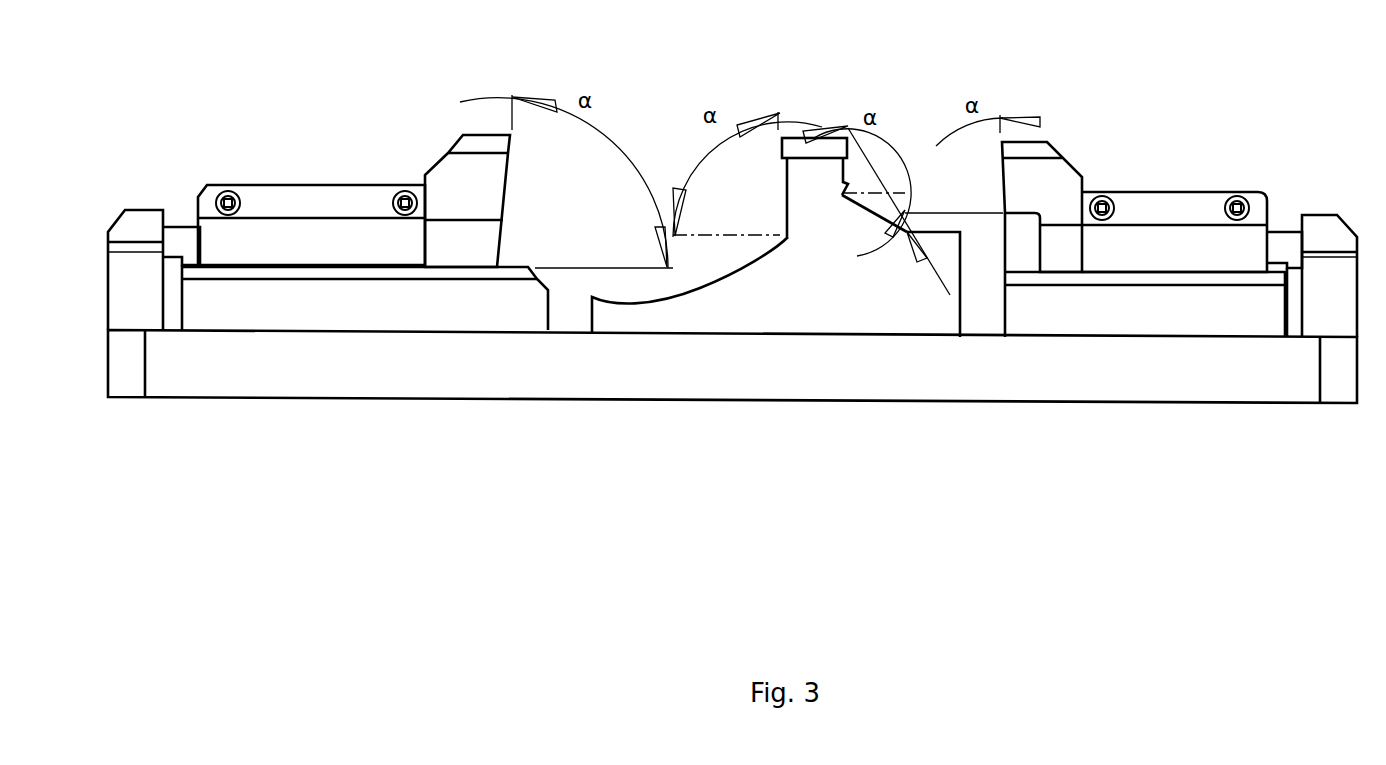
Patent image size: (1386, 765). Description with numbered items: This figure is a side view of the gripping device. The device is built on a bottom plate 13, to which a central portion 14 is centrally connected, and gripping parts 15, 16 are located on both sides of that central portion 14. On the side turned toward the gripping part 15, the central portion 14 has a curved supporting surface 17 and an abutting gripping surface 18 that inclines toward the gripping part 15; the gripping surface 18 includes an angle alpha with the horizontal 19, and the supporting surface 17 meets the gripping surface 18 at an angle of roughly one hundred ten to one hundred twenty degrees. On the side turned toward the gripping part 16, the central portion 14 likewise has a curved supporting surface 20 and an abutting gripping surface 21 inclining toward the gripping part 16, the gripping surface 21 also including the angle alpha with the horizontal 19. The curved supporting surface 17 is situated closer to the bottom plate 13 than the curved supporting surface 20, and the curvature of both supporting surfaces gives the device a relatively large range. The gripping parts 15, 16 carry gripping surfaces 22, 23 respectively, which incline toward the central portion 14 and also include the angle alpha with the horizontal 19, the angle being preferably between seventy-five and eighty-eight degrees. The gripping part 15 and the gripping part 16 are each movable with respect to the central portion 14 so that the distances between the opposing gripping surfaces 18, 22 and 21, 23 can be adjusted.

The bottom plate 13 is at (353, 377).
The central portion 14 is at (810, 313).
The gripping part 15 is at (287, 245).
The gripping part 16 is at (1172, 262).
The curved supporting surface 17 is at (667, 300).
The gripping surface 18 is at (785, 202).
The horizontal 19 is at (720, 227).
The curved supporting surface 20 is at (905, 195).
The gripping surface 21 is at (853, 200).
The gripping surface 22 is at (510, 170).
The gripping surface 23 is at (1003, 177).